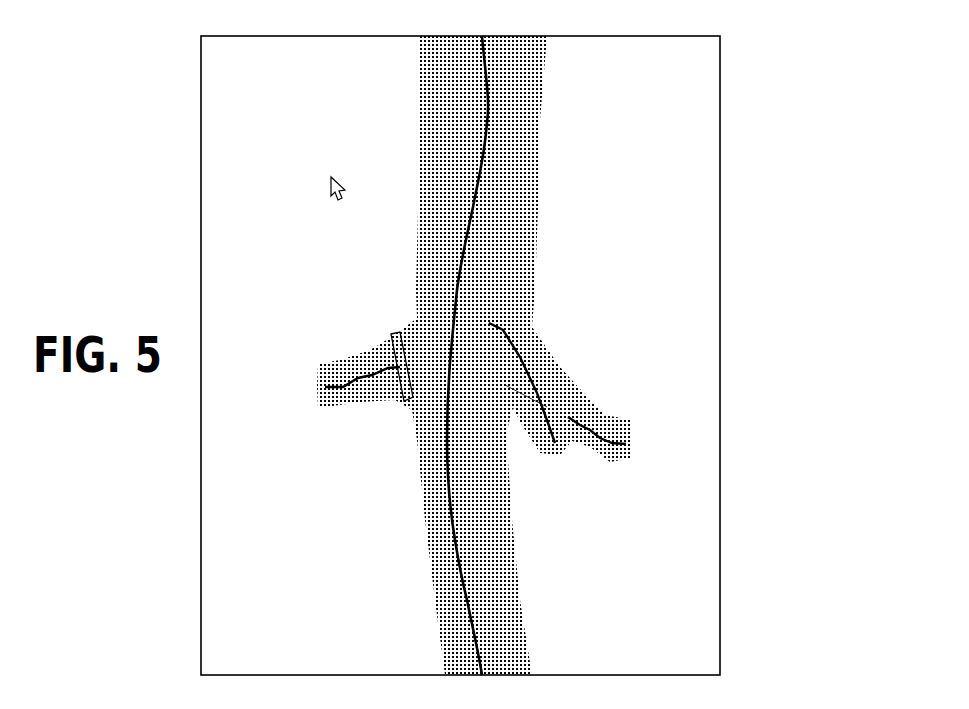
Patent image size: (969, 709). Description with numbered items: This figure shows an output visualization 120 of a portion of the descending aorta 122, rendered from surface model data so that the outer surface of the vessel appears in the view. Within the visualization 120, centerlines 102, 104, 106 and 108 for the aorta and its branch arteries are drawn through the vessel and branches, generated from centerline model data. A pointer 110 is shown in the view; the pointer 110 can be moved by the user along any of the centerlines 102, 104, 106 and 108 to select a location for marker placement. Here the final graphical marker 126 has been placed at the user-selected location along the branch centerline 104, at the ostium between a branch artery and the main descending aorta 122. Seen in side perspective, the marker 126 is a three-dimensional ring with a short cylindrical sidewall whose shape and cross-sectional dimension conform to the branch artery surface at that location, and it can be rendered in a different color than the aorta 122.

The centerline 102 is at (487, 123).
The branch centerline 104 is at (342, 390).
The centerline 106 is at (527, 365).
The centerline 108 is at (597, 430).
The pointer 110 is at (329, 198).
The output visualization 120 is at (758, 160).
The descending aorta 122 is at (538, 172).
The final graphical marker 126 is at (392, 333).